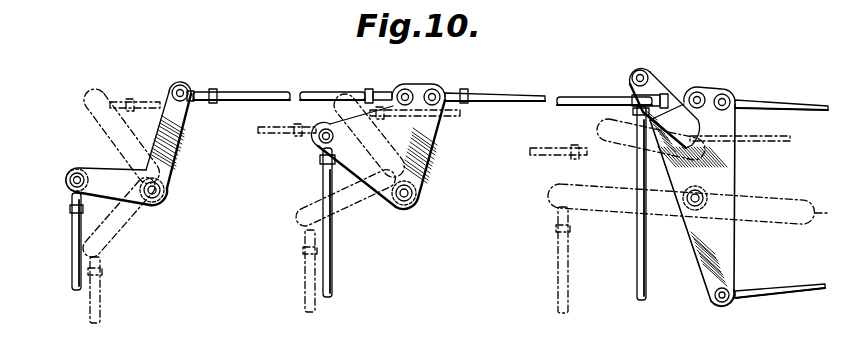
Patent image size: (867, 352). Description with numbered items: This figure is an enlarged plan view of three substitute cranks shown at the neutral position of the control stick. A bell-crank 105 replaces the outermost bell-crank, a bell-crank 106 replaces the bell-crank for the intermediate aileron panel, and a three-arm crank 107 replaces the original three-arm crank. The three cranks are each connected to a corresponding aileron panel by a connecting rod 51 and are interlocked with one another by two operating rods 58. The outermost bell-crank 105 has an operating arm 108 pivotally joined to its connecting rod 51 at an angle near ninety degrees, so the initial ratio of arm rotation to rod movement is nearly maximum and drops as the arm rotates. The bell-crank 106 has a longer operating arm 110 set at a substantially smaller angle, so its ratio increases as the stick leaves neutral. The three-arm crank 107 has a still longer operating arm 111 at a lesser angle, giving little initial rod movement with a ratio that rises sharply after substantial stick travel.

The connecting rod 51 is at (72, 272).
The operating rod 58 is at (261, 92).
The bell-crank 105 is at (180, 150).
The bell-crank 106 is at (437, 157).
The three-arm crank 107 is at (720, 255).
The operating arm 108 is at (100, 178).
The operating arm 110 is at (318, 160).
The operating arm 111 is at (658, 86).